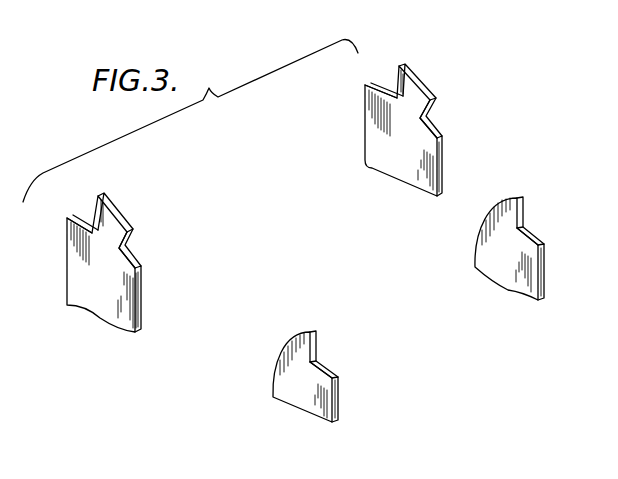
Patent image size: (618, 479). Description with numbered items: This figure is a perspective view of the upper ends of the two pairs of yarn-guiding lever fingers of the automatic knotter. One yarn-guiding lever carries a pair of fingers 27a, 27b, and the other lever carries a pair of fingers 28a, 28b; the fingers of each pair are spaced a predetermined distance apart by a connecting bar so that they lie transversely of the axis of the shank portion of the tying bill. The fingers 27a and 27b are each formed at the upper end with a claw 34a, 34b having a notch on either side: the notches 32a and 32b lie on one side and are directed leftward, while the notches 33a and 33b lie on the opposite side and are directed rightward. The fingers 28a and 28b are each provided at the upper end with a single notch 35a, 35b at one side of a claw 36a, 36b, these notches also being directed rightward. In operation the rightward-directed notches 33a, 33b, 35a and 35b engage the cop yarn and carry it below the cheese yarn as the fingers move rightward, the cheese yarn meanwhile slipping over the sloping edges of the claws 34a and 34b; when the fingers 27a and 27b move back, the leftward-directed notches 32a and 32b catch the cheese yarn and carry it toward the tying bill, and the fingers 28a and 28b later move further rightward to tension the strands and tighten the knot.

The finger 27a is at (128, 318).
The notch 32a is at (90, 226).
The notch 33a is at (131, 249).
The claw 34a is at (127, 158).
The finger 27b is at (373, 157).
The notch 32b is at (394, 88).
The notch 33b is at (424, 119).
The claw 34b is at (440, 22).
The finger 28a is at (302, 400).
The notch 35a is at (318, 362).
The claw 36a is at (303, 332).
The finger 28b is at (505, 270).
The notch 35b is at (522, 228).
The claw 36b is at (512, 199).